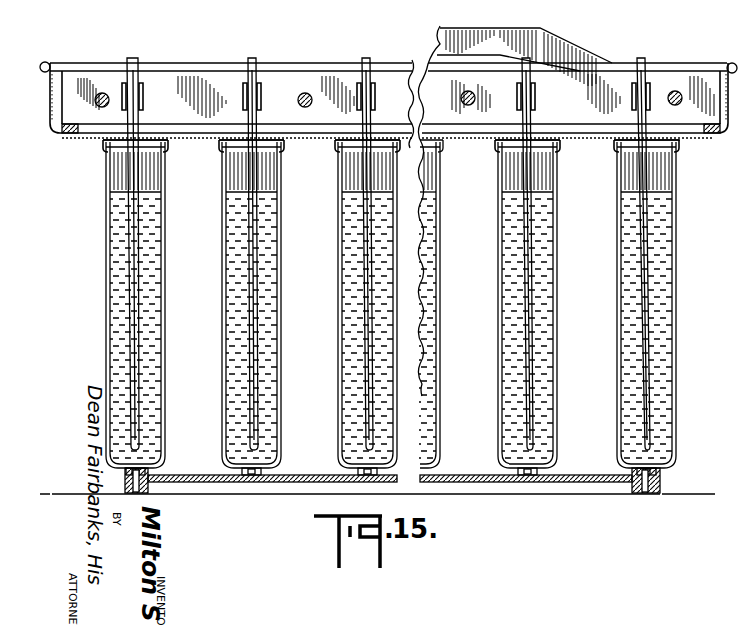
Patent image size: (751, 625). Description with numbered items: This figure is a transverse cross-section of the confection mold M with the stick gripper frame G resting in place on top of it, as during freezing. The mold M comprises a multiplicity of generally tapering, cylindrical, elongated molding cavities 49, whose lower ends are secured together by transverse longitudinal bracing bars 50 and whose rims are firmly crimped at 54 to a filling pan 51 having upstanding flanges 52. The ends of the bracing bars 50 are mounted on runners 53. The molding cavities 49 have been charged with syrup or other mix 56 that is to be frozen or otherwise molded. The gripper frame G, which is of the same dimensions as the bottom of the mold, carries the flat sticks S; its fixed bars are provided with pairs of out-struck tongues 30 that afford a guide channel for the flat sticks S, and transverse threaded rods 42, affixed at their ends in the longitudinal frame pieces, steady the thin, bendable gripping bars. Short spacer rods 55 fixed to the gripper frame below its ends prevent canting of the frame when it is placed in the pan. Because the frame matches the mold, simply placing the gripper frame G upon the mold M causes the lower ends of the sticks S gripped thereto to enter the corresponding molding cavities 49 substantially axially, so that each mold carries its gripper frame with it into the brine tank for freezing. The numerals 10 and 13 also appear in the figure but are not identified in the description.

The out-struck tongues 30 is at (258, 98).
The gripper frame G is at (289, 84).
The transverse threaded ties or rods 42 is at (461, 100).
The upstanding flanges 52 is at (52, 126).
The short spacer rods 55 is at (74, 140).
The filling pan 51 is at (583, 142).
The molding cavities 49 is at (342, 405).
The crimp 54 is at (283, 147).
The syrup or other mix 56 is at (156, 305).
The flat sticks S is at (252, 278).
The mold M is at (101, 181).
The transverse longitudinal bracing bars 50 is at (481, 469).
The runners 53 is at (153, 489).
The base 10 is at (395, 470).
The panel 13 is at (750, 187).